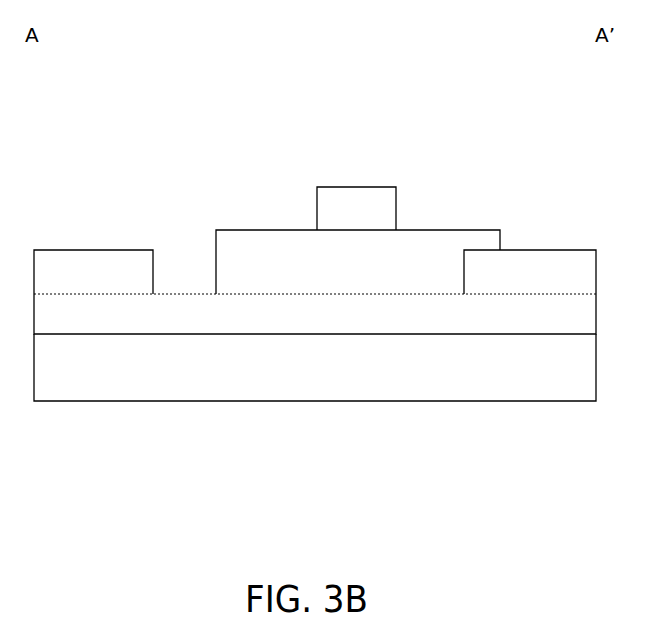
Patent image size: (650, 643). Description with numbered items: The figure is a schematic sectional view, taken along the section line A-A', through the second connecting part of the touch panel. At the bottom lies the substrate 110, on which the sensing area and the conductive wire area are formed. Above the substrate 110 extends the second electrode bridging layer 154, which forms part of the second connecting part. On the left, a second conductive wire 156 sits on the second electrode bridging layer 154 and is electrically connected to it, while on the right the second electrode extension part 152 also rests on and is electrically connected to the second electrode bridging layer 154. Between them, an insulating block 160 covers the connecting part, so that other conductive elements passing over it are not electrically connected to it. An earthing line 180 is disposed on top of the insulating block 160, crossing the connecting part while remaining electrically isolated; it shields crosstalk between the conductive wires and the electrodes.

The substrate 110 is at (325, 387).
The second electrode bridging layer 154 is at (325, 325).
The second conductive wire 156 is at (104, 270).
The second electrode extension part 152 is at (543, 270).
The insulating block 160 is at (263, 265).
The earthing line 180 is at (373, 220).